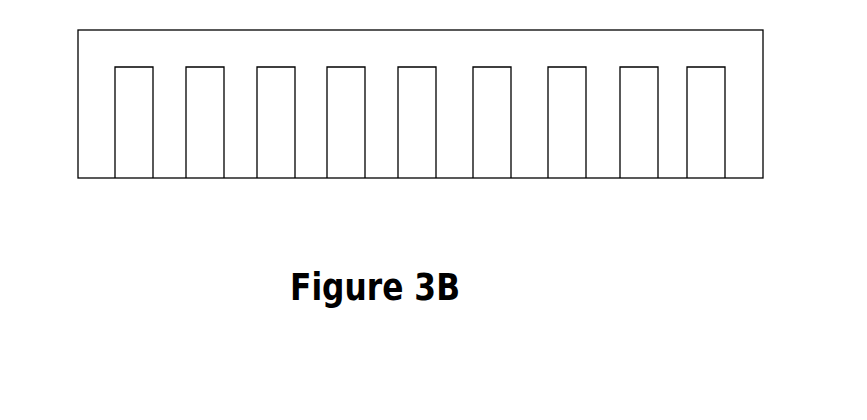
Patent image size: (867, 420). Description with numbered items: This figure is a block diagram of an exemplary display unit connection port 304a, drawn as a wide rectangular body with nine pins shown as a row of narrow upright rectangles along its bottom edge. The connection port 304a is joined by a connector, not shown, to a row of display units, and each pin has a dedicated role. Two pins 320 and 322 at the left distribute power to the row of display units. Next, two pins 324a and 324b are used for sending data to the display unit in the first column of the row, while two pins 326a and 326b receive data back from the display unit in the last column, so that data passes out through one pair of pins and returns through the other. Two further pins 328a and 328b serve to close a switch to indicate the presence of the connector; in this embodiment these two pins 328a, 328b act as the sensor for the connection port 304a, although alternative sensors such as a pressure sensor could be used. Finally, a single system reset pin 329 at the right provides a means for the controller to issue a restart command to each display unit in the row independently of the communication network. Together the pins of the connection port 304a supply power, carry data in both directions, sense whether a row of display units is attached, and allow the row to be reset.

The display unit connection port 304a is at (422, 30).
The pin 320 is at (140, 178).
The pin 322 is at (211, 178).
The pin 324a is at (282, 178).
The pin 324b is at (352, 178).
The pin 326a is at (423, 178).
The pin 326b is at (498, 178).
The pin 328a is at (573, 178).
The pin 328b is at (645, 178).
The system reset pin 329 is at (712, 178).